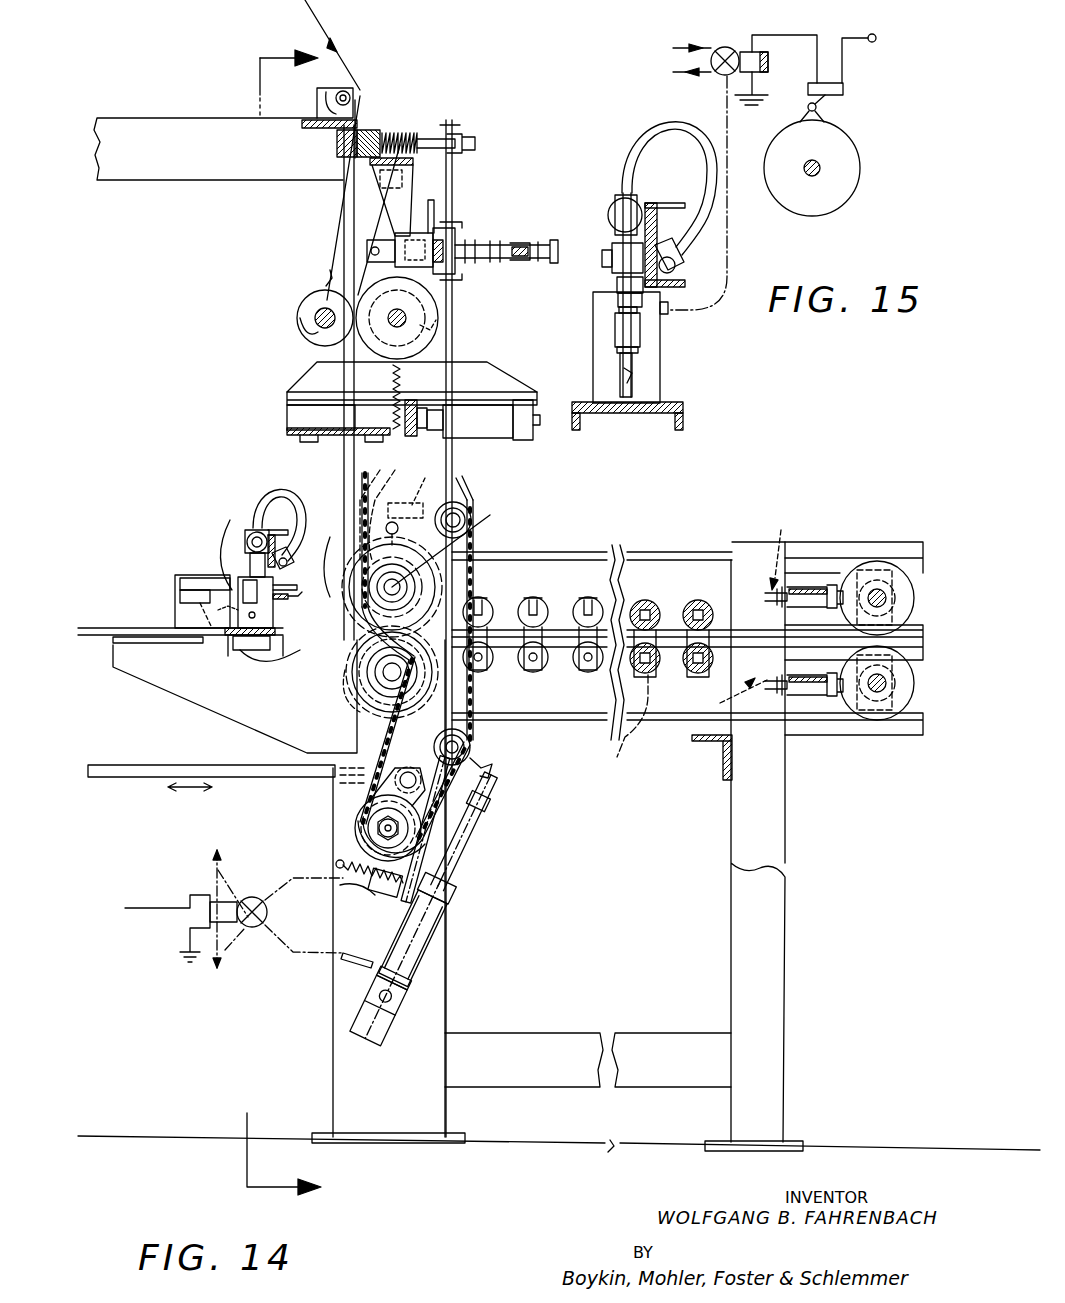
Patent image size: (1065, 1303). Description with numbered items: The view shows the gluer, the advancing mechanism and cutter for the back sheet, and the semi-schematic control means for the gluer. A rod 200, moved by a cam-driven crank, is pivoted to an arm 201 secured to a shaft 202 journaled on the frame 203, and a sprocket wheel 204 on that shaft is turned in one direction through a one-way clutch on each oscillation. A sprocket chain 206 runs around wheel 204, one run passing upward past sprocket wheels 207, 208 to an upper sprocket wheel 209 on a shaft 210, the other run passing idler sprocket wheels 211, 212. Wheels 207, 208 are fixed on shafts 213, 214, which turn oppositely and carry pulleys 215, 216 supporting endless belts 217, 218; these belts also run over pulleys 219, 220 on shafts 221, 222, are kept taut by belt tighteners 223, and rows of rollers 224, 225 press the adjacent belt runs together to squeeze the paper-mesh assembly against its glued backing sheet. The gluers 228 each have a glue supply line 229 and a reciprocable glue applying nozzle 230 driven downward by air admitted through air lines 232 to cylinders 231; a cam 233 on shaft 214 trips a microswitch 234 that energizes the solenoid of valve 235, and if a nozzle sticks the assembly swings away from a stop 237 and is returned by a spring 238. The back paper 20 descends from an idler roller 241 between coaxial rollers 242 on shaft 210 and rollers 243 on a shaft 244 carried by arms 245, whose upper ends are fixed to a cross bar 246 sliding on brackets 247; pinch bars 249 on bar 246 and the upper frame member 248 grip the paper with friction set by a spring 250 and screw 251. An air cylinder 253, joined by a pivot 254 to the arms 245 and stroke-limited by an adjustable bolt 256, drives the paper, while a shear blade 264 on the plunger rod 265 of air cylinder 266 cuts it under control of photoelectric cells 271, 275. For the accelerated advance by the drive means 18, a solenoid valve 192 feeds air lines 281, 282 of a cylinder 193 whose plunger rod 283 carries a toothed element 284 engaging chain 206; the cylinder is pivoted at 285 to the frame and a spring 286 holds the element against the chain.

In FIG. 14, the drive means 18 is at (493, 550).
In FIG. 14, the back paper 20 is at (338, 68).
In FIG. 14, the solenoid valve 192 is at (245, 960).
In FIG. 14, the cylinder 193 is at (420, 982).
In FIG. 14, the rod 200 is at (228, 760).
In FIG. 14, the arm 201 is at (462, 822).
In FIG. 14, the shaft 202 is at (375, 828).
In FIG. 14, the frame 203 is at (448, 940).
In FIG. 14, the sprocket wheel 204 is at (365, 835).
In FIG. 14, the sprocket chain 206 is at (476, 690).
In FIG. 14, the sprocket wheel 207 is at (357, 705).
In FIG. 14, the sprocket wheel 208 is at (497, 566).
In FIG. 14, the upper sprocket wheel 209 is at (442, 322).
In FIG. 14, the shaft 210 is at (408, 318).
In FIG. 14, the idler sprocket wheel 211 is at (478, 743).
In FIG. 14, the idler sprocket wheel 212 is at (468, 507).
In FIG. 14, the shaft 213 is at (383, 672).
In FIG. 14, the shaft 214 is at (458, 541).
In FIG. 15, the shaft 214 is at (820, 168).
In FIG. 14, the pulley 215 is at (360, 715).
In FIG. 14, the pulley 216 is at (440, 606).
In FIG. 14, the endless belt 217 is at (663, 720).
In FIG. 14, the endless belt 218 is at (668, 552).
In FIG. 14, the pulley 219 is at (885, 712).
In FIG. 14, the pulley 220 is at (877, 563).
In FIG. 14, the shaft 221 is at (874, 692).
In FIG. 14, the shaft 222 is at (872, 588).
In FIG. 14, the belt tightener 223 is at (738, 706).
In FIG. 14, the rollers 224 is at (616, 717).
In FIG. 14, the rollers 225 is at (700, 604).
In FIG. 14, the gluer 228 is at (299, 611).
In FIG. 15, the gluer 228 is at (645, 365).
In FIG. 14, the glue supply line 229 is at (292, 479).
In FIG. 15, the glue supply line 229 is at (672, 124).
In FIG. 15, the glue applying nozzle 230 is at (640, 385).
In FIG. 15, the cylinder 231 is at (600, 337).
In FIG. 15, the air line 232 is at (730, 265).
In FIG. 14, the cam 233 is at (385, 506).
In FIG. 15, the cam 233 is at (848, 186).
In FIG. 14, the microswitch 234 is at (418, 499).
In FIG. 15, the microswitch 234 is at (845, 88).
In FIG. 15, the valve 235 is at (735, 35).
In FIG. 14, the stop 237 is at (245, 580).
In FIG. 14, the spring 238 is at (202, 576).
In FIG. 14, the idler roller 241 is at (352, 100).
In FIG. 14, the coaxial rollers 242 is at (447, 338).
In FIG. 14, the rollers 243 is at (298, 336).
In FIG. 14, the shaft 244 is at (300, 306).
In FIG. 14, the arms 245 is at (330, 270).
In FIG. 14, the horizontal cross bar 246 is at (375, 132).
In FIG. 14, the brackets 247 is at (415, 186).
In FIG. 14, the upper frame member 248 is at (338, 142).
In FIG. 14, the pinch bars 249 is at (380, 120).
In FIG. 14, the spring 250 is at (405, 135).
In FIG. 14, the screw 251 is at (450, 140).
In FIG. 14, the air cylinder 253 is at (430, 230).
In FIG. 14, the pivot 254 is at (383, 238).
In FIG. 14, the adjustable bolt 256 is at (508, 244).
In FIG. 14, the shear blade 264 is at (370, 440).
In FIG. 14, the plunger rod 265 is at (430, 398).
In FIG. 14, the air cylinder 266 is at (483, 440).
In FIG. 14, the photoelectric cell 271 is at (180, 600).
In FIG. 14, the photoelectric cell 275 is at (207, 543).
In FIG. 14, the air line 281 is at (360, 885).
In FIG. 14, the air line 282 is at (343, 960).
In FIG. 14, the plunger rod 283 is at (455, 866).
In FIG. 14, the toothed element 284 is at (490, 772).
In FIG. 14, the pivot 285 is at (392, 998).
In FIG. 14, the spring 286 is at (358, 905).